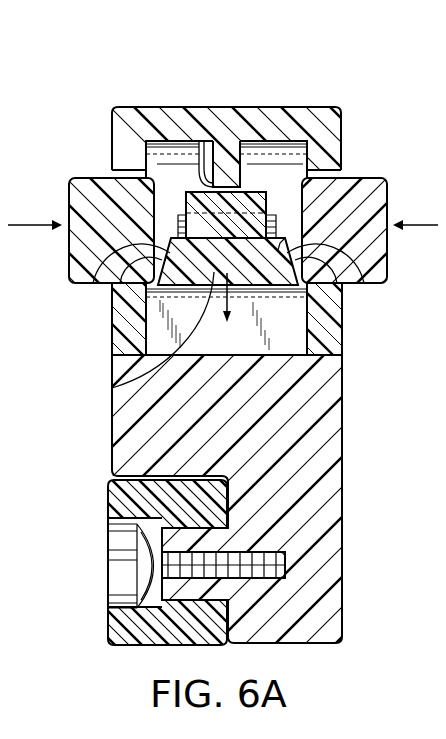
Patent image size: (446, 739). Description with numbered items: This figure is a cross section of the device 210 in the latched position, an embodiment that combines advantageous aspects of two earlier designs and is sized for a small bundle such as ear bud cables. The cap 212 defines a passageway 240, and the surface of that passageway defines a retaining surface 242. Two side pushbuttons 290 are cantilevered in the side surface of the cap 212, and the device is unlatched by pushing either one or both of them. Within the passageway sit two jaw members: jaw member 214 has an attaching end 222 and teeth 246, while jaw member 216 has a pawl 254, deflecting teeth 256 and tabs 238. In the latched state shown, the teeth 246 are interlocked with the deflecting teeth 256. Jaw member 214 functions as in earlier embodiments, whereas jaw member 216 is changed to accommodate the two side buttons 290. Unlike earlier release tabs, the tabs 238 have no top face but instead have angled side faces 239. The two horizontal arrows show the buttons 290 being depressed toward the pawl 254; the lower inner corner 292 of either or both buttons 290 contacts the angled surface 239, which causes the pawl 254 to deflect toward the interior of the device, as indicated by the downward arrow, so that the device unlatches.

The device 210 is at (92, 30).
The cap 212 is at (120, 107).
The jaw member 214 is at (108, 487).
The jaw member 216 is at (112, 433).
The attaching end 222 is at (245, 192).
The tabs 238 is at (88, 283).
The angled side faces 239 is at (112, 303).
The passageway 240 is at (157, 176).
The retaining surface 242 is at (200, 165).
The teeth 246 is at (268, 215).
The pawl 254 is at (112, 388).
The deflecting teeth 256 is at (292, 205).
The side pushbuttons 290 is at (90, 178).
The lower inner corner 292 is at (112, 355).